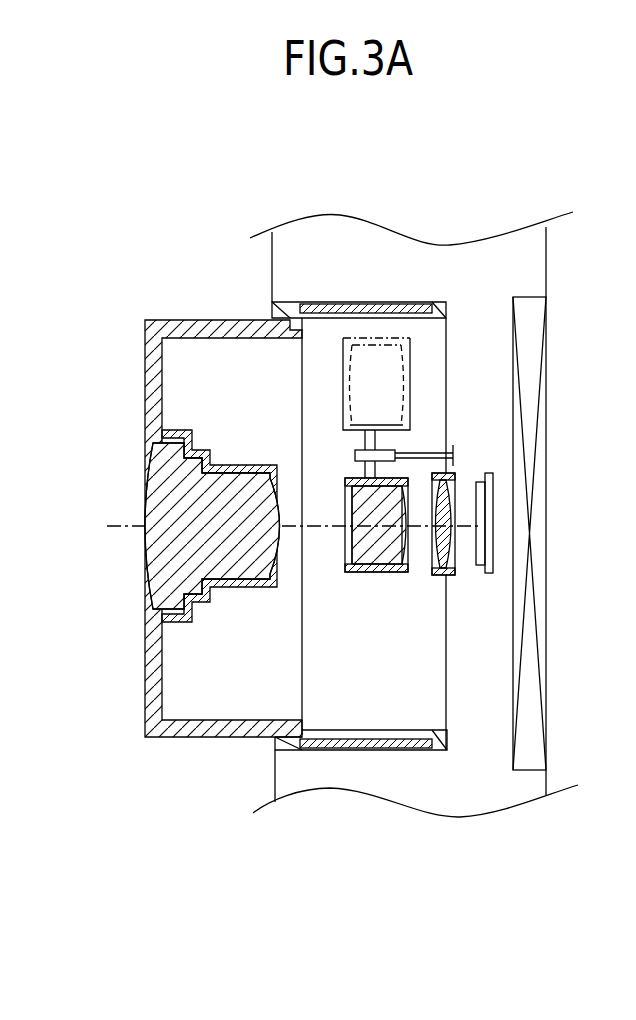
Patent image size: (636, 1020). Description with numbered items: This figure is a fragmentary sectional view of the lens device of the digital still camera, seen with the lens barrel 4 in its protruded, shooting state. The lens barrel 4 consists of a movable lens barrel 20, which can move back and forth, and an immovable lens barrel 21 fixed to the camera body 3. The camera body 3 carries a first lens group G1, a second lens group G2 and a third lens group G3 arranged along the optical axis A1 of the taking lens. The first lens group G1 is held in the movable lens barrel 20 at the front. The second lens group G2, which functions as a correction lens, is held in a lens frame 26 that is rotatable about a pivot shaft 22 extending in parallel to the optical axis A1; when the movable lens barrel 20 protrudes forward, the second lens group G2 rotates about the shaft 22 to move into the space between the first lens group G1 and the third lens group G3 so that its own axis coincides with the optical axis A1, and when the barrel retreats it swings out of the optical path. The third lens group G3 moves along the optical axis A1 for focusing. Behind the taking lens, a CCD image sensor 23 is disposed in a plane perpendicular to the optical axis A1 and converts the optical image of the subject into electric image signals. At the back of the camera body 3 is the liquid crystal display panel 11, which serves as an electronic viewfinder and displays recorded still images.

The camera body 3 is at (546, 258).
The lens barrel 4 is at (330, 165).
The liquid crystal display panel 11 is at (537, 533).
The movable lens barrel 20 is at (185, 327).
The immovable lens barrel 21 is at (370, 298).
The pivot shaft 22 is at (413, 452).
The CCD image sensor 23 is at (490, 482).
The lens frame 26 is at (353, 573).
The optical axis A1 is at (122, 527).
The first lens group G1 is at (235, 562).
The second lens group G2 is at (380, 568).
The third lens group G3 is at (445, 552).